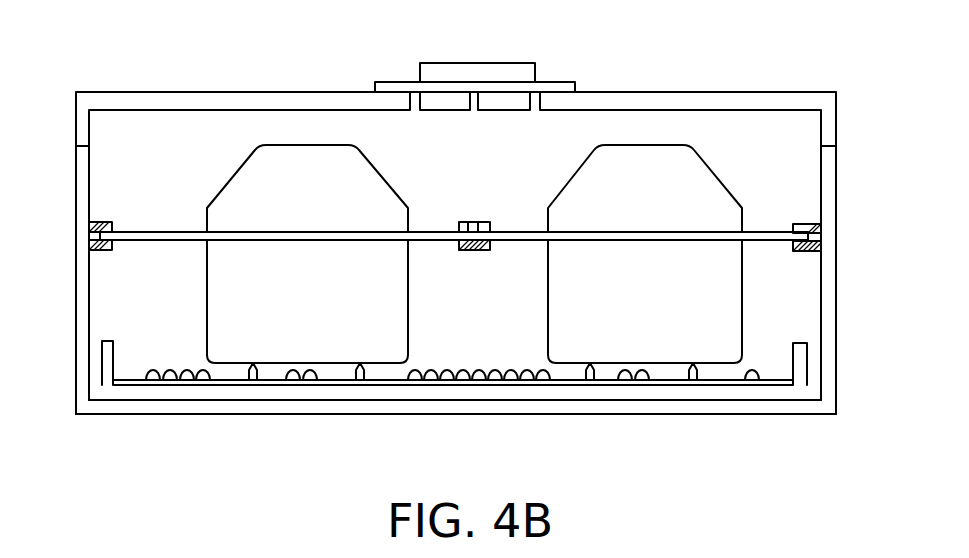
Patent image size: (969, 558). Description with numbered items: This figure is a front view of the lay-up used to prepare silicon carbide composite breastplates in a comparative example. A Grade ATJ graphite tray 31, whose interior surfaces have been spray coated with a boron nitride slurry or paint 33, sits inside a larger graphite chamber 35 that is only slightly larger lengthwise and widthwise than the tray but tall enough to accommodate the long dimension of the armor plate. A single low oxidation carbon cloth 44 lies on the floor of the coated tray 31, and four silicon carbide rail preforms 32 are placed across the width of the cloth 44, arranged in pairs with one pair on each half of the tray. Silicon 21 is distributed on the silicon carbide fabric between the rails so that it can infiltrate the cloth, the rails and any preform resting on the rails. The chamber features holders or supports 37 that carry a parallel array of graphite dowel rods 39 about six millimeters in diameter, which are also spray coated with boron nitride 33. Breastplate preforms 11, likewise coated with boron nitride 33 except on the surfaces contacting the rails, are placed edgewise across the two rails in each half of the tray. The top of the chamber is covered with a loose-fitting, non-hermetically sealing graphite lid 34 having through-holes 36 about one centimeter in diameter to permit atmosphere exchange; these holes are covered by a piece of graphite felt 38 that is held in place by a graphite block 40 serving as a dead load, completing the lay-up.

The breastplate preform 11 is at (245, 190).
The silicon 21 is at (450, 376).
The graphite tray 31 is at (128, 392).
The silicon carbide rail preform 32 is at (253, 379).
The boron nitride slurry or paint 33 is at (134, 230).
The graphite lid 34 is at (106, 95).
The graphite chamber 35 is at (810, 412).
The through-holes 36 is at (534, 110).
The graphite holders or supports 37 is at (102, 252).
The graphite felt 38 is at (385, 88).
The graphite dowel rods 39 is at (778, 236).
The graphite block 40 is at (454, 70).
The carbon cloth 44 is at (752, 380).